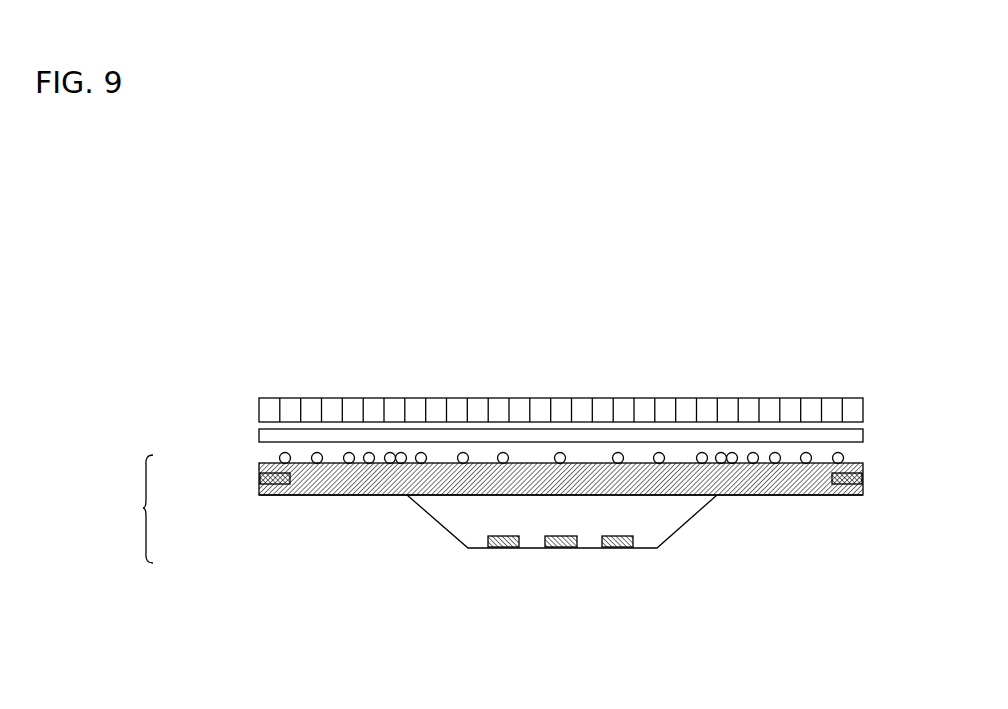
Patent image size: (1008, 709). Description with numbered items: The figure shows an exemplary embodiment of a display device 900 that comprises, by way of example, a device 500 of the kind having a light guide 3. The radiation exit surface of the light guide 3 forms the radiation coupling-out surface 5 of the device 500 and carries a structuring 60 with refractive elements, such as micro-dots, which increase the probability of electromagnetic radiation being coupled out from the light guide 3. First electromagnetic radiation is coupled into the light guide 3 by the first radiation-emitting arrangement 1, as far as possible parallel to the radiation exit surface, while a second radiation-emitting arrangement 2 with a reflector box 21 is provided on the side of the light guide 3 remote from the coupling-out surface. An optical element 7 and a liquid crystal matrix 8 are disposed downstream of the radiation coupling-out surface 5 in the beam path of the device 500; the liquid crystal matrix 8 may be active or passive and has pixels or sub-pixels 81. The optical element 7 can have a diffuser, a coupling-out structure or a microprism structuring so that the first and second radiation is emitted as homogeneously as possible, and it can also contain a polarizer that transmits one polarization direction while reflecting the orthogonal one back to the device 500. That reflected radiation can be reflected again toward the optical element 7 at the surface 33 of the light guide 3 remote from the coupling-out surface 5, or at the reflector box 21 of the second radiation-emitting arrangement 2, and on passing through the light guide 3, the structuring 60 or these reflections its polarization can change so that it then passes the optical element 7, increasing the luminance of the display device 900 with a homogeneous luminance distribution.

The display device 900 is at (353, 176).
The liquid crystal matrix 8 is at (561, 347).
The pixels or sub-pixels 81 is at (582, 408).
The optical element 7 is at (375, 437).
The structuring 60 is at (270, 453).
The device 500 is at (140, 508).
The radiation coupling-out surface 5 is at (542, 407).
The light guide 3 is at (542, 534).
The surface of the light guide remote from the radiation coupling-out surface 33 is at (372, 497).
The first radiation-emitting arrangement 1 is at (259, 496).
The second radiation-emitting arrangement 2 is at (600, 560).
The reflector box 21 is at (657, 548).